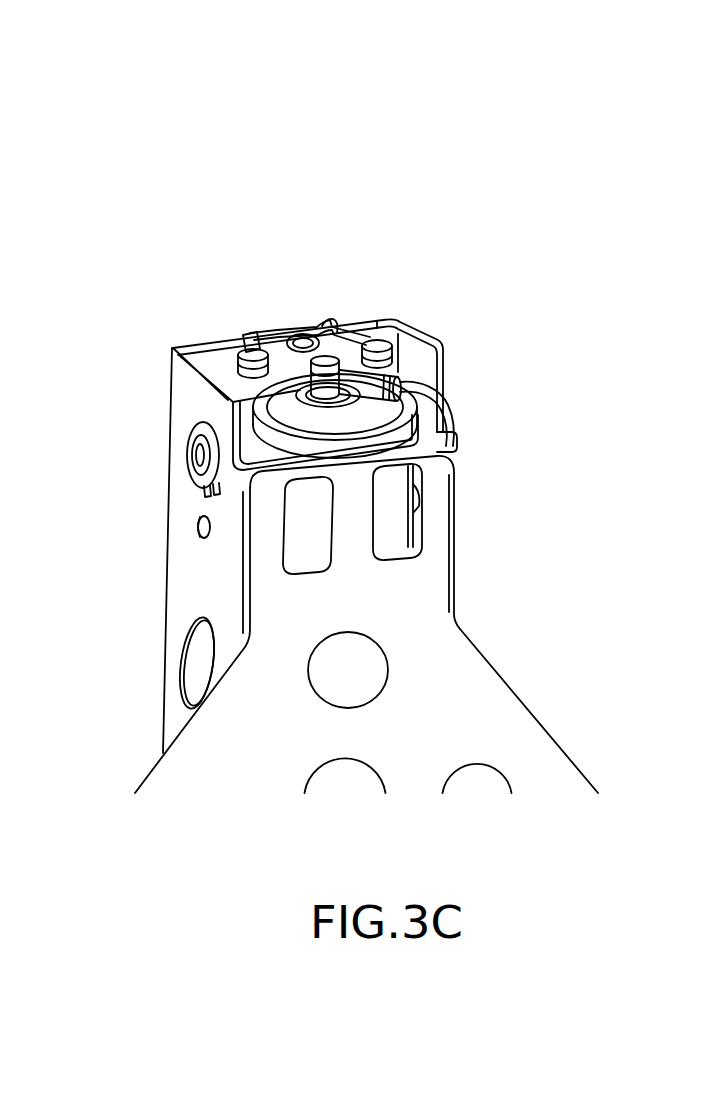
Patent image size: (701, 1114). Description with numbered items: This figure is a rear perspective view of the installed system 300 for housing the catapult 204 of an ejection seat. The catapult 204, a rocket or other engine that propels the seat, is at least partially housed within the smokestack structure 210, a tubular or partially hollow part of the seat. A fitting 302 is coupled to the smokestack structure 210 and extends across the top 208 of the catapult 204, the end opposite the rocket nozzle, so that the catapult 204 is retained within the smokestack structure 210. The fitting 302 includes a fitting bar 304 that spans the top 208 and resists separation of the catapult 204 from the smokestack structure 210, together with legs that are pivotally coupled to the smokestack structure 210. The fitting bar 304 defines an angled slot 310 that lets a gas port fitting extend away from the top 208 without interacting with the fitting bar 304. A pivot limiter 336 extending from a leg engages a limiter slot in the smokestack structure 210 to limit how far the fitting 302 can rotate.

The system 300 is at (348, 129).
The fitting 302 is at (213, 347).
The fitting bar 304 is at (283, 352).
The angled slot 310 is at (299, 351).
The top 208 is at (400, 381).
The catapult 204 is at (395, 430).
The pivot limiter 336 is at (196, 529).
The smokestack structure 210 is at (176, 590).